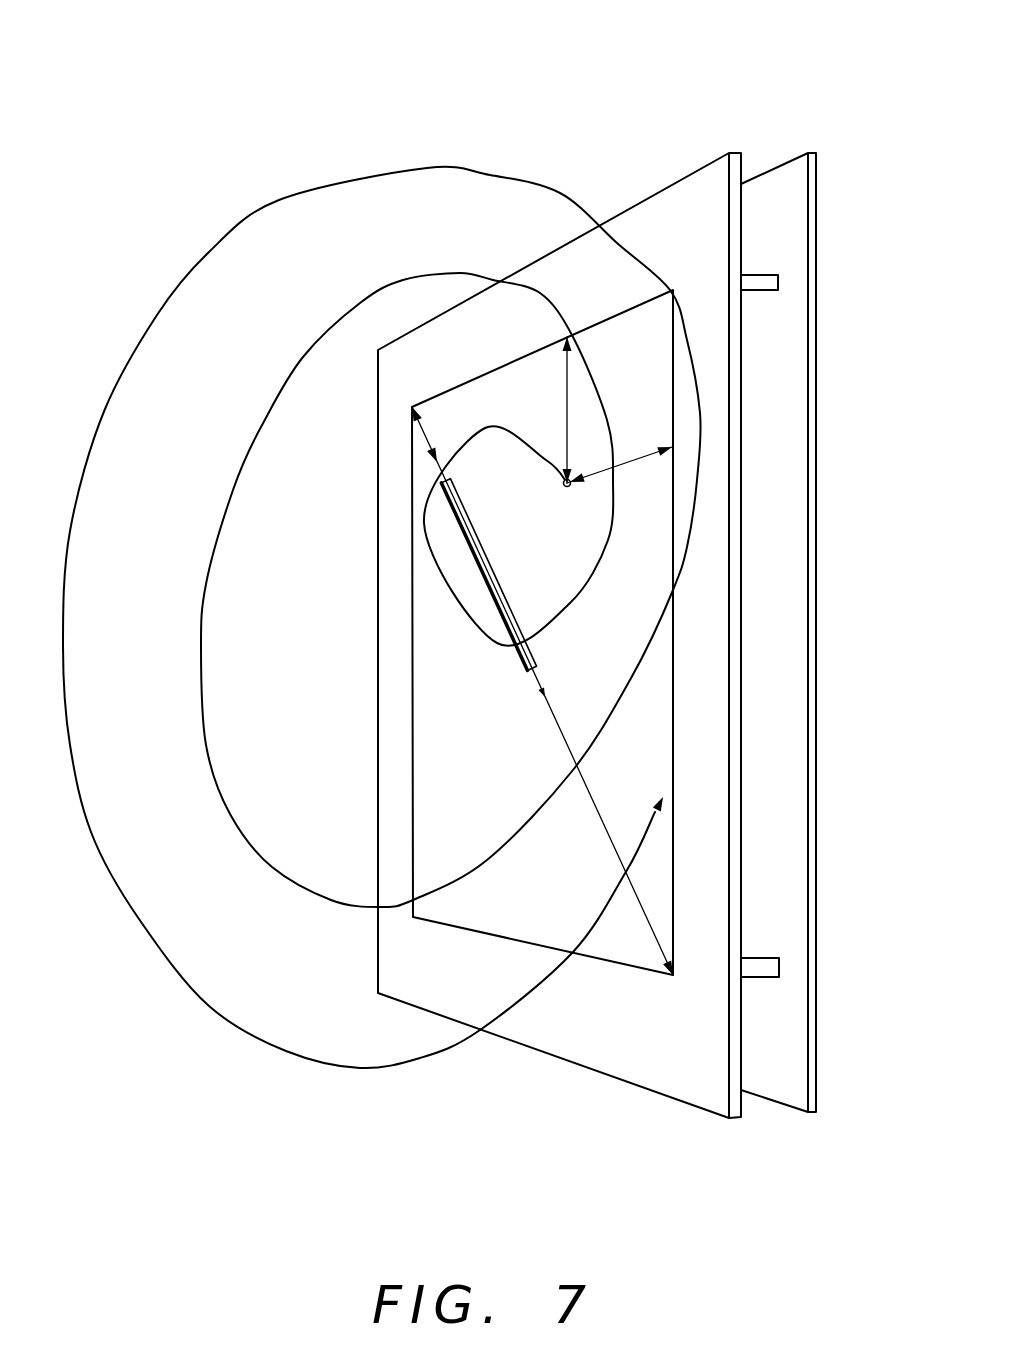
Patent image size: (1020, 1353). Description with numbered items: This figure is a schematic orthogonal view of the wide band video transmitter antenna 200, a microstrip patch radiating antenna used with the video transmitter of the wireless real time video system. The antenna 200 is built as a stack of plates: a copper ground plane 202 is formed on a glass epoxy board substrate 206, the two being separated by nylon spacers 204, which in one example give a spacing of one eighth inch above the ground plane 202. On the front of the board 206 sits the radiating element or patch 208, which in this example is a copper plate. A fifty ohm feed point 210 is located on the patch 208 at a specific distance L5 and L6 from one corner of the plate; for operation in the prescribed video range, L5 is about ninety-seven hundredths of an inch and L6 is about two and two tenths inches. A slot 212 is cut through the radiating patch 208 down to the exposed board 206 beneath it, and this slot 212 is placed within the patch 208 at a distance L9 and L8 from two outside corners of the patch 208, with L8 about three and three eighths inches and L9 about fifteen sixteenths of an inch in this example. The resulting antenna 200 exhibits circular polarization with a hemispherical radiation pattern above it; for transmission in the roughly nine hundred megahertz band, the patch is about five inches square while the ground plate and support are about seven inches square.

The wide band video transmitter antenna 200 is at (697, 138).
The copper ground plane 202 is at (802, 473).
The nylon spacers 204 is at (762, 291).
The glass epoxy board substrate 206 is at (640, 200).
The radiating element or patch 208 is at (620, 310).
The 50 ohm feed point 210 is at (571, 478).
The slot 212 is at (513, 657).
The feed point distance L5 is at (566, 392).
The feed point distance L6 is at (600, 470).
The slot distance L8 is at (595, 802).
The slot distance L9 is at (432, 432).